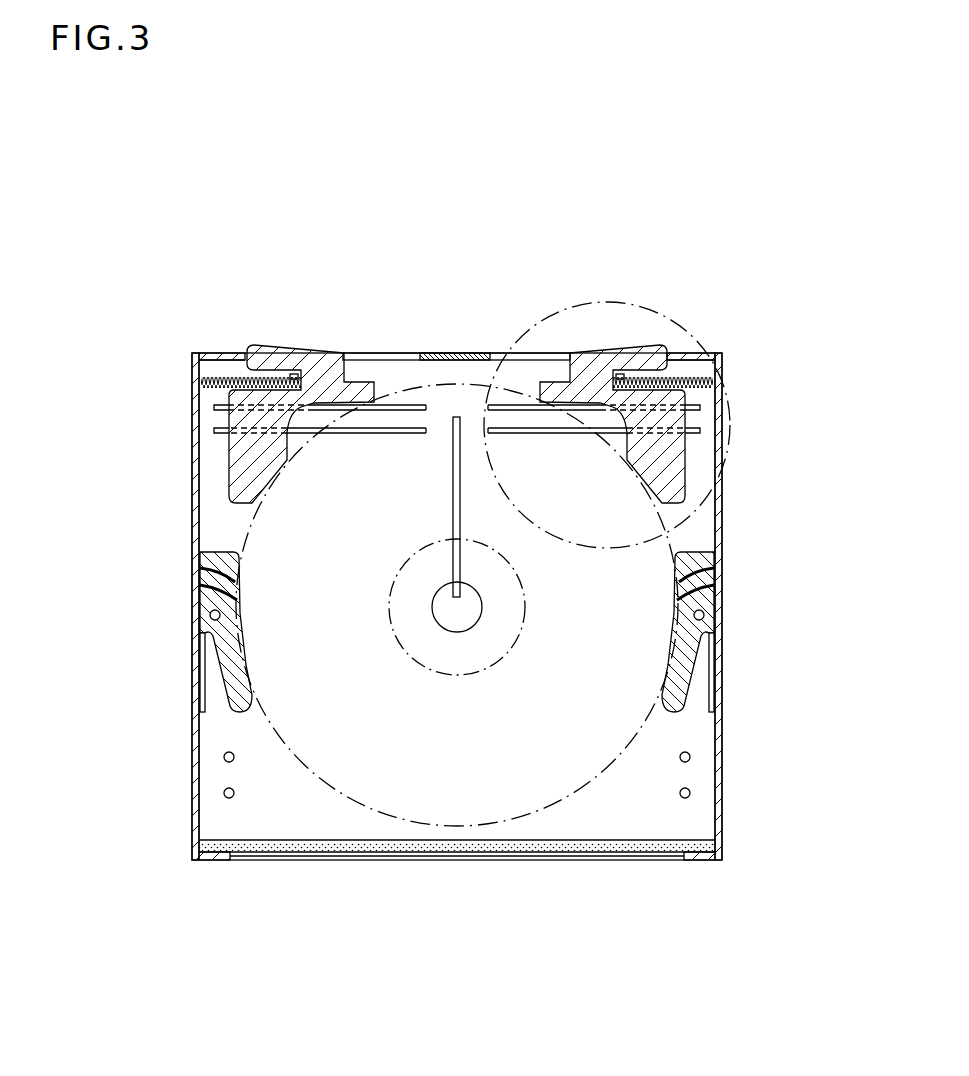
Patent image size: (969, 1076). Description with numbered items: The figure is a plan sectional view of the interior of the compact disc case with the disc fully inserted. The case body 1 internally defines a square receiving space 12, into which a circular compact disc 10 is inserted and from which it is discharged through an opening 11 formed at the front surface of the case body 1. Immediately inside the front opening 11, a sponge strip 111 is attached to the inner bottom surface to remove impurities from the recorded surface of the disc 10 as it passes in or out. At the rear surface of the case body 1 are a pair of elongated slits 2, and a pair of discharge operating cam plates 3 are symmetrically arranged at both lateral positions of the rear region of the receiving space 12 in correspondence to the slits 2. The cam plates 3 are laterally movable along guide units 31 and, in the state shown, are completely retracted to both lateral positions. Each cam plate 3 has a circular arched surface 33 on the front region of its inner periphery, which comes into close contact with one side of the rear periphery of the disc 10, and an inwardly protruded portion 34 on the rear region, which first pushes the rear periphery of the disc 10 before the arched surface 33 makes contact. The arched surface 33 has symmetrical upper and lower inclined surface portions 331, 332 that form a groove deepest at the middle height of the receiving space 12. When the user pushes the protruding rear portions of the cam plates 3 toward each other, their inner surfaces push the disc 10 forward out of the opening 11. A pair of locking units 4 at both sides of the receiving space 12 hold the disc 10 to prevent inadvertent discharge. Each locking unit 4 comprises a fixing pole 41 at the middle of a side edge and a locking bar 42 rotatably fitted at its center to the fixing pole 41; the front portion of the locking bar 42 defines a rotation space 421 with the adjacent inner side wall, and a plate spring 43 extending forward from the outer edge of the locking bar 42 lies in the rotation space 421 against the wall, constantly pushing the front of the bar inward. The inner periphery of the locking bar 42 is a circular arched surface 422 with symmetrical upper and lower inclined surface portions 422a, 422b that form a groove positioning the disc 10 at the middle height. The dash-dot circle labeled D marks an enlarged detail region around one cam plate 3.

The case body 1 is at (413, 639).
The elongated slits 2 is at (403, 355).
The discharge operating cam plates 3 is at (390, 387).
The locking units 4 is at (414, 642).
The compact disc 10 is at (592, 783).
The opening 11 is at (497, 853).
The receiving space 12 is at (262, 813).
The guide units 31 is at (705, 419).
The circular arched surface 33 is at (287, 466).
The inwardly protruded portion 34 is at (373, 385).
The fixing pole 41 is at (210, 616).
The locking bar 42 is at (240, 685).
The plate spring 43 is at (203, 662).
The sponge strip 111 is at (385, 847).
The upper inclined surface portion 331 is at (183, 495).
The lower inclined surface portion 332 is at (276, 485).
The rotation space 421 is at (213, 682).
The circular arched surface 422 is at (200, 583).
The upper inclined surface portion 422a is at (143, 544).
The lower inclined surface portion 422b is at (200, 570).
The detail circle D is at (690, 330).